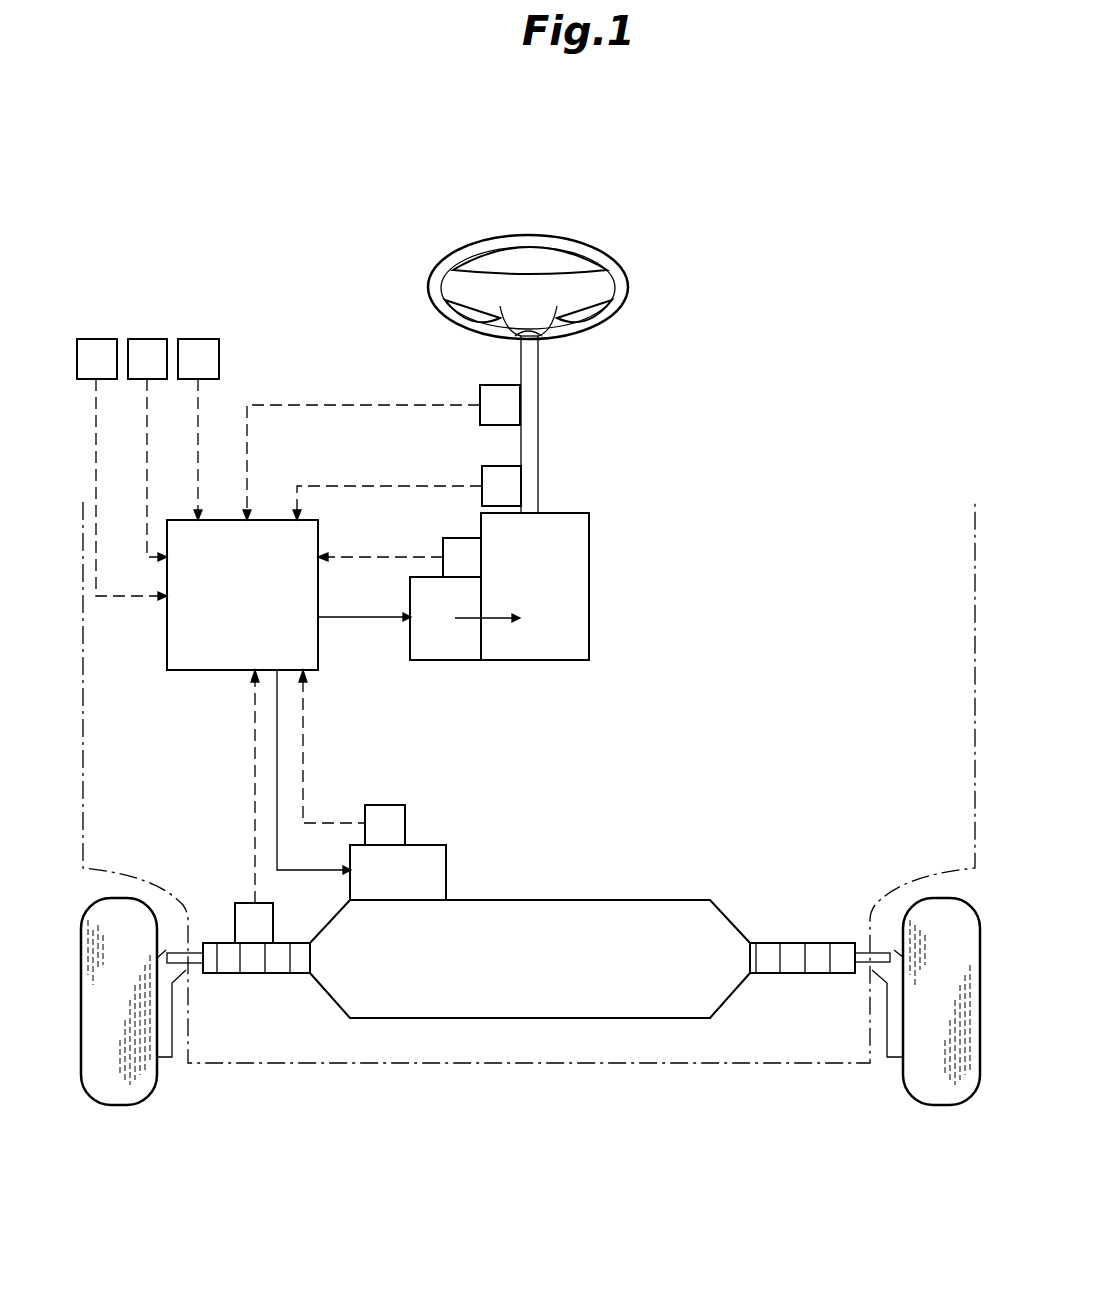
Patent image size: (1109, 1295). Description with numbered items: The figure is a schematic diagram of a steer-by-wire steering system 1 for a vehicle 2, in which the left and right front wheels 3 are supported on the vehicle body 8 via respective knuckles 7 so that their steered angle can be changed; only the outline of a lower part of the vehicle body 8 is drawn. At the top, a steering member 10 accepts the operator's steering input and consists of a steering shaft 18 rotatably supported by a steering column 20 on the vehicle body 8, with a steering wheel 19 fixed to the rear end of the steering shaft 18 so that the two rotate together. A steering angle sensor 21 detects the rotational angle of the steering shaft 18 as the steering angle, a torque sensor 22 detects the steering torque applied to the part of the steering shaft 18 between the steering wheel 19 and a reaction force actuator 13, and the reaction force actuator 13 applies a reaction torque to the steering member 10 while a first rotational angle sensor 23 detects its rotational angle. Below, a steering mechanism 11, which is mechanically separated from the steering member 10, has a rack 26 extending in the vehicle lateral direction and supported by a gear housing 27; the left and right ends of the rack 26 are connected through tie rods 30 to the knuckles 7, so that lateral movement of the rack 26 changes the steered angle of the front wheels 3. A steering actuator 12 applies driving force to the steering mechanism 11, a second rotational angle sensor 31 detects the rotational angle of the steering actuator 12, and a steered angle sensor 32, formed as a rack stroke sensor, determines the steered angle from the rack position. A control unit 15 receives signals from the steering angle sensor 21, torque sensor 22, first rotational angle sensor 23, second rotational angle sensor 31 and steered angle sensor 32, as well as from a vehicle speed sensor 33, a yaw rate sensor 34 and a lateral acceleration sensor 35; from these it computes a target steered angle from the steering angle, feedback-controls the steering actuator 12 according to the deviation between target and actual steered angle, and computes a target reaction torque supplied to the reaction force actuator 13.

The steering system 1 is at (405, 238).
The vehicle 2 is at (225, 155).
The front wheels 3 is at (112, 1100).
The knuckles 7 is at (165, 1060).
The vehicle body 8 is at (752, 1065).
The steering member 10 is at (632, 225).
The steering mechanism 11 is at (316, 995).
The steering actuator 12 is at (446, 870).
The reaction force actuator 13 is at (446, 660).
The control unit 15 is at (198, 672).
The steering shaft 18 is at (538, 432).
The steering wheel 19 is at (602, 328).
The steering column 20 is at (589, 540).
The steering angle sensor 21 is at (492, 385).
The torque sensor 22 is at (485, 466).
The first rotational angle sensor 23 is at (462, 538).
The rack 26 is at (790, 973).
The gear housing 27 is at (540, 1018).
The tie rods 30 is at (200, 963).
The second rotational angle sensor 31 is at (405, 825).
The steered angle sensor 32 is at (235, 925).
The vehicle speed sensor 33 is at (205, 339).
The yaw rate sensor 34 is at (148, 339).
The lateral acceleration sensor 35 is at (95, 339).